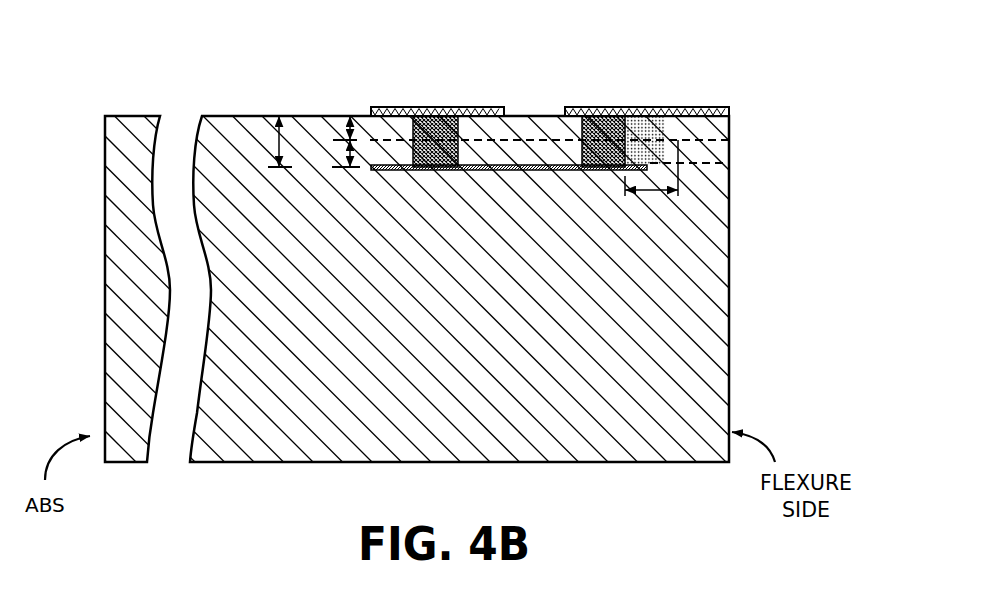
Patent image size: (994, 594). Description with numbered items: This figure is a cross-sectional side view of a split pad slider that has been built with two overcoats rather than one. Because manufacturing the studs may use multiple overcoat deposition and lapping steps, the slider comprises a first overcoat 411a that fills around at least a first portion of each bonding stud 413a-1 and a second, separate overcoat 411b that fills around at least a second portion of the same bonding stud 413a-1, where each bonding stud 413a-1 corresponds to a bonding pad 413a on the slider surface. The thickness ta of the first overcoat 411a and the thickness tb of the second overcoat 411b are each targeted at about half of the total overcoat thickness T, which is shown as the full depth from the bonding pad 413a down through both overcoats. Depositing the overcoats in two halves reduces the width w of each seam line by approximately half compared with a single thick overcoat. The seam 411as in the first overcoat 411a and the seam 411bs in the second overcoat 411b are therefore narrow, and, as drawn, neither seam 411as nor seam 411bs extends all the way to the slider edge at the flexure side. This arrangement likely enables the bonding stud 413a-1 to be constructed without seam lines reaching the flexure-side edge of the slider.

The first overcoat 411a is at (732, 160).
The second overcoat 411b is at (732, 125).
The seam line of first overcoat 411as is at (650, 158).
The seam line of second overcoat 411bs is at (662, 128).
The bonding pad 413a is at (600, 108).
The bonding stud 413a-1 is at (580, 117).
The total overcoat thickness T is at (275, 144).
The thickness of first overcoat ta is at (347, 125).
The thickness of second overcoat tb is at (348, 157).
The seam line width w is at (658, 192).